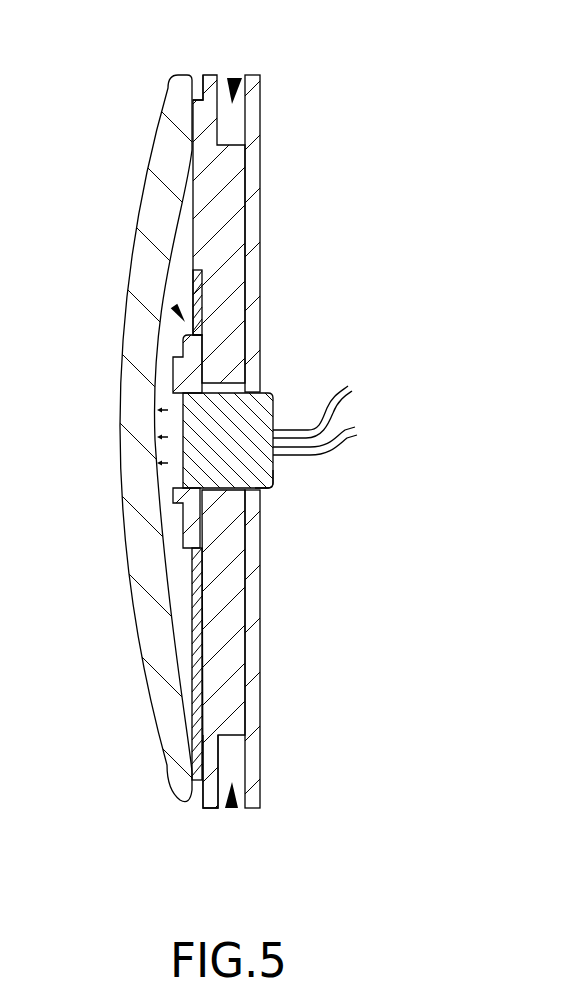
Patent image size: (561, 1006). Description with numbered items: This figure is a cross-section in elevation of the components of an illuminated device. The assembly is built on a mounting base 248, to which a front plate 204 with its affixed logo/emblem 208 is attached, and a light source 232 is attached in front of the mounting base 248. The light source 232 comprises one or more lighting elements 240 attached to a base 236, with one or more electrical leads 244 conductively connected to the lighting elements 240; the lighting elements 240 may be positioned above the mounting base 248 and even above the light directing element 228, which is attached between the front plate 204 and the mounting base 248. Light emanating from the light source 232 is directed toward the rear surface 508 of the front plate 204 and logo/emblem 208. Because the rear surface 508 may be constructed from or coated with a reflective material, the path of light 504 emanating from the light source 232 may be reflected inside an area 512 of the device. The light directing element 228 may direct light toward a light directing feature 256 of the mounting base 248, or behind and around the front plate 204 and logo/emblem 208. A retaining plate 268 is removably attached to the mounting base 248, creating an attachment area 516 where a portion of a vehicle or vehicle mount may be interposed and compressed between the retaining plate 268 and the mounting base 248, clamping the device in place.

The front plate 204 is at (280, 440).
The logo/emblem 208 is at (280, 440).
The light directing element 228 is at (192, 618).
The light source 232 is at (298, 482).
The base 236 is at (272, 493).
The lighting elements 240 is at (173, 482).
The electrical leads 244 is at (342, 389).
The mounting base 248 is at (205, 96).
The light directing feature 256 is at (202, 787).
The retaining plate 268 is at (262, 105).
The path of light 504 is at (168, 437).
The rear surface 508 is at (158, 345).
The area 512 is at (174, 306).
The attachment area 516 is at (236, 77).